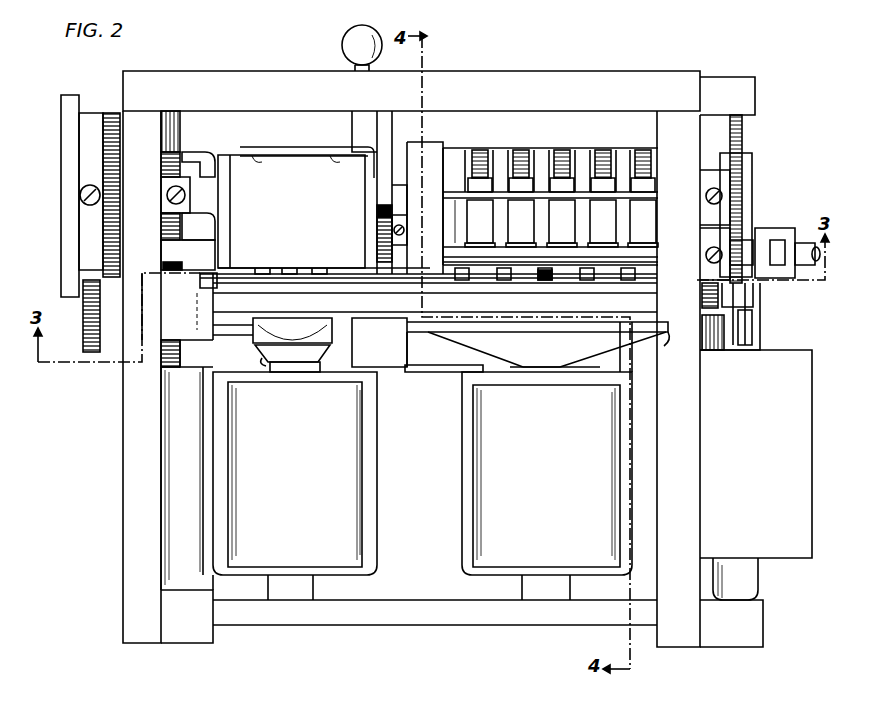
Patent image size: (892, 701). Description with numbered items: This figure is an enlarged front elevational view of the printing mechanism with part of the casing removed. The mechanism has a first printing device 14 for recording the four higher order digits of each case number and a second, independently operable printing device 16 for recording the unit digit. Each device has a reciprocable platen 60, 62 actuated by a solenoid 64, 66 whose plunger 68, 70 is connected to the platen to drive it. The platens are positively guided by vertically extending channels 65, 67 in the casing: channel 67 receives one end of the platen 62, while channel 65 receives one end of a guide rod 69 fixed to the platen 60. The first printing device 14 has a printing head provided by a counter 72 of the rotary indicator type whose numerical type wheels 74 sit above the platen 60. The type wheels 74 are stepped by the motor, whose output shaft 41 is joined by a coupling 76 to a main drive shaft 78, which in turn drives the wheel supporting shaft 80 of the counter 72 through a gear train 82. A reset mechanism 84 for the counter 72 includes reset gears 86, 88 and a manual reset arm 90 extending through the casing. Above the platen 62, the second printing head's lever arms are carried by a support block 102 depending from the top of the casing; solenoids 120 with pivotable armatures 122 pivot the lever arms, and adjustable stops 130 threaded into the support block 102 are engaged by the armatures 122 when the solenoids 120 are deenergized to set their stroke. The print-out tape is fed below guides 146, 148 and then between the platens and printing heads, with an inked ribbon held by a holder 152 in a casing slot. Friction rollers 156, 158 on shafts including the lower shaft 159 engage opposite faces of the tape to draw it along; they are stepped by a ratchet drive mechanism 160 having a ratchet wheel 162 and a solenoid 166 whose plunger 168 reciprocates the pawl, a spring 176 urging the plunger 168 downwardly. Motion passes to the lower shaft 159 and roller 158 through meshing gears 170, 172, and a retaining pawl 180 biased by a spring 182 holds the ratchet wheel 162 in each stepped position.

The gear train 82 is at (113, 150).
The meshing gear 170 is at (172, 152).
The wheel supporting shaft 80 is at (198, 164).
The main drive shaft 78 is at (185, 246).
The counter 72 is at (296, 219).
The numerical type wheels 74 is at (265, 268).
The first printing device 14 is at (290, 268).
The holder 152 is at (200, 286).
The channel 65 is at (204, 313).
The guide rod 69 is at (187, 353).
The meshing gear 172 is at (165, 364).
The platen 60 is at (292, 345).
The plunger 68 is at (262, 362).
The solenoid 64 is at (300, 439).
The guide 148 is at (391, 308).
The shaft 159 is at (362, 340).
The friction roller 158 is at (448, 368).
The platen 62 is at (554, 345).
The plunger 70 is at (524, 367).
The solenoid 66 is at (558, 439).
The reset mechanism 84 is at (393, 147).
The friction roller 156 is at (437, 146).
The support block 102 is at (558, 136).
The adjustable stop 130 is at (510, 160).
The armature 122 is at (558, 186).
The solenoid 120 is at (518, 221).
The reset gear 88 is at (382, 190).
The reset gear 86 is at (377, 214).
The manual reset arm 90 is at (342, 50).
The second printing device 16 is at (640, 262).
The ratchet drive mechanism 160 is at (752, 180).
The ratchet wheel 162 is at (742, 193).
The coupling 76 is at (788, 230).
The output shaft 41 is at (814, 245).
The spring 176 is at (704, 296).
The channel 67 is at (622, 312).
The plunger 168 is at (753, 306).
The retaining pawl 180 is at (752, 324).
The spring 182 is at (708, 334).
The solenoid 166 is at (757, 518).
The guide 146 is at (325, 630).